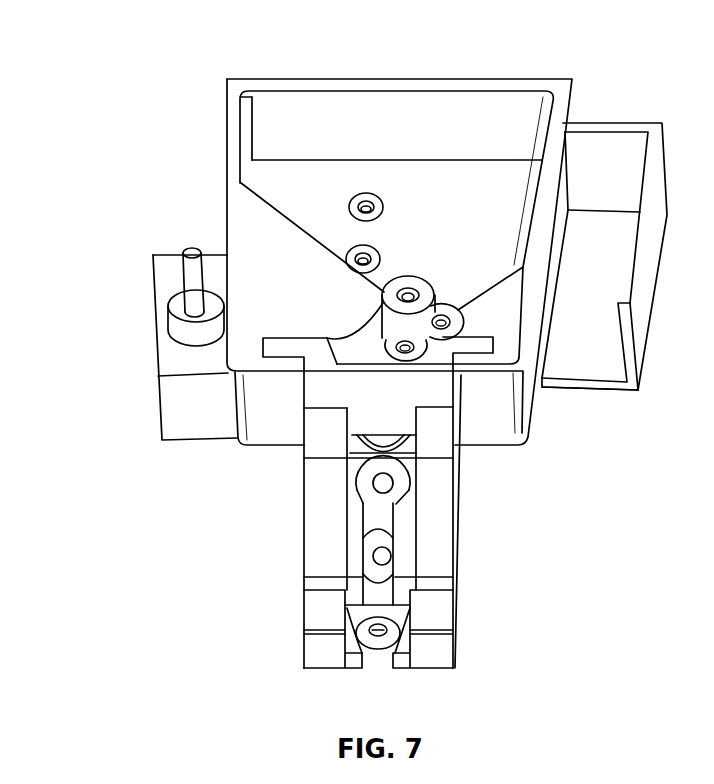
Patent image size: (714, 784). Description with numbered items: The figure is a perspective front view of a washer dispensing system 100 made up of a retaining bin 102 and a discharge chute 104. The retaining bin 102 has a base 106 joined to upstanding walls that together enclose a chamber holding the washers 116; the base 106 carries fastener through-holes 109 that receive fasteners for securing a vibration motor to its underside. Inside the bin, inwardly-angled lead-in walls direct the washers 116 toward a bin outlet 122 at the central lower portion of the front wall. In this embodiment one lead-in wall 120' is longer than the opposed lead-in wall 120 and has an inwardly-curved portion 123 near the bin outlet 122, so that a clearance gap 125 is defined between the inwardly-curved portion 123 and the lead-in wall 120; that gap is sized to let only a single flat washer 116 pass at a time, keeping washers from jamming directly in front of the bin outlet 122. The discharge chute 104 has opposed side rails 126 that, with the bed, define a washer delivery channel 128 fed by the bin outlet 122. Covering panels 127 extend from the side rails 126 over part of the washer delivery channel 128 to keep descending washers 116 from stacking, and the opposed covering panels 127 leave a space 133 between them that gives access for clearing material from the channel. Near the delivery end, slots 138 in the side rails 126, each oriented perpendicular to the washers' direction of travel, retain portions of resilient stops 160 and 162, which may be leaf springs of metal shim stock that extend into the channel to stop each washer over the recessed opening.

The washer dispensing system 100 is at (134, 56).
The retaining bin 102 is at (512, 76).
The discharge chute 104 is at (466, 573).
The base 106 is at (438, 175).
The fastener through-holes 109 is at (368, 195).
The washers 116 is at (426, 293).
The lead-in wall 120 is at (484, 274).
The lead-in wall 120' is at (309, 192).
The bin outlet 122 is at (453, 458).
The inwardly-curved portion 123 is at (398, 278).
The clearance gap 125 is at (402, 320).
The side rails 126 is at (303, 527).
The covering panels 127 is at (333, 553).
The washer delivery channel 128 is at (357, 467).
The space 133 is at (383, 517).
The slots 138 is at (318, 607).
The resilient stop 160 is at (412, 640).
The resilient stop 162 is at (343, 640).